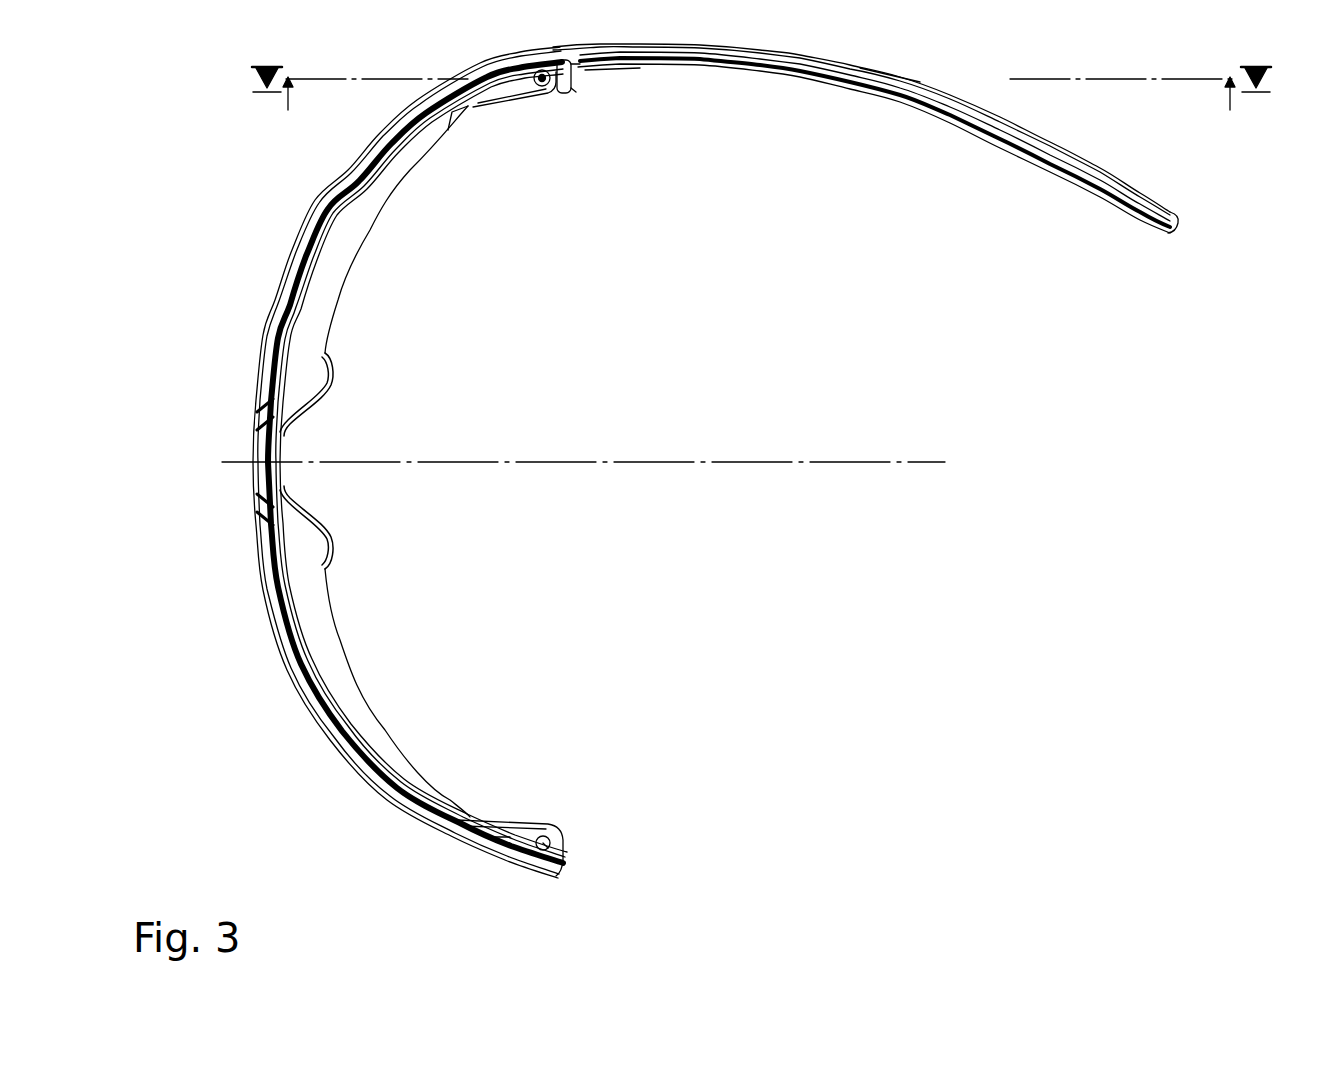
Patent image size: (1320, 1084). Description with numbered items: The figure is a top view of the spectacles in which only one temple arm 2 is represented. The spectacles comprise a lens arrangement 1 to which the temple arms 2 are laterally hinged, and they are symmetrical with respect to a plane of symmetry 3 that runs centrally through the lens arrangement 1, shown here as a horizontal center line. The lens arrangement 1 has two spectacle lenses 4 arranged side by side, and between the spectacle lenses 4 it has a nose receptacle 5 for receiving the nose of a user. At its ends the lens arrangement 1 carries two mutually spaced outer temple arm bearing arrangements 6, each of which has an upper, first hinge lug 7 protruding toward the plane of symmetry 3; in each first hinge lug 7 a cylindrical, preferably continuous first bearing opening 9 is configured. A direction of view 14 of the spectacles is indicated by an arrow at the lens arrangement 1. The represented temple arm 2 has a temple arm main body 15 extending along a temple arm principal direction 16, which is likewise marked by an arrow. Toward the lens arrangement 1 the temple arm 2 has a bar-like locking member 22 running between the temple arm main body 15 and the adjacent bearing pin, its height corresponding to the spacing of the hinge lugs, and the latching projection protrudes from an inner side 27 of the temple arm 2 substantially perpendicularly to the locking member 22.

The lens arrangement 1 is at (258, 591).
The temple arm 2 is at (750, 80).
The plane of symmetry 3 is at (495, 460).
The spectacle lens 4 is at (328, 273).
The nose receptacle 5 is at (290, 450).
The temple arm bearing arrangement 6 is at (558, 104).
The first hinge lug 7 is at (524, 87).
The first bearing opening 9 is at (513, 860).
The direction of view 14 is at (280, 225).
The temple arm main body 15 is at (888, 84).
The temple arm principal direction 16 is at (790, 98).
The locking member 22 is at (569, 88).
The inner side 27 is at (634, 68).